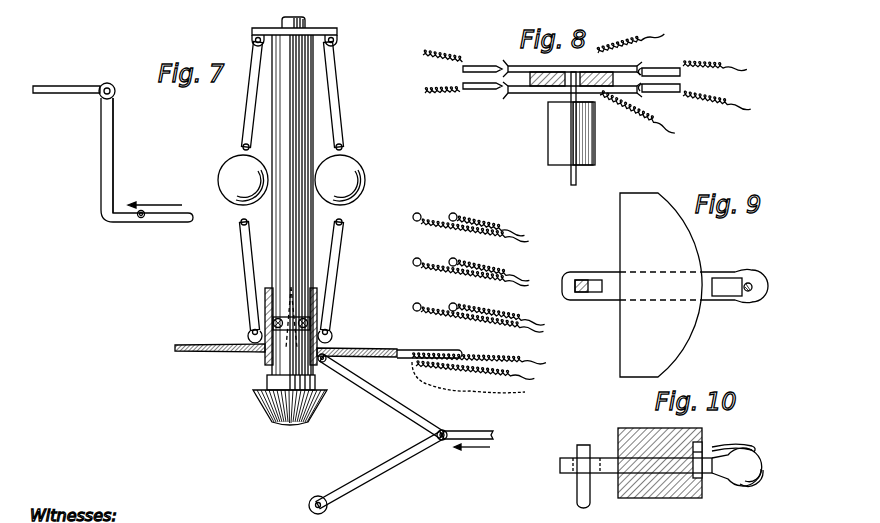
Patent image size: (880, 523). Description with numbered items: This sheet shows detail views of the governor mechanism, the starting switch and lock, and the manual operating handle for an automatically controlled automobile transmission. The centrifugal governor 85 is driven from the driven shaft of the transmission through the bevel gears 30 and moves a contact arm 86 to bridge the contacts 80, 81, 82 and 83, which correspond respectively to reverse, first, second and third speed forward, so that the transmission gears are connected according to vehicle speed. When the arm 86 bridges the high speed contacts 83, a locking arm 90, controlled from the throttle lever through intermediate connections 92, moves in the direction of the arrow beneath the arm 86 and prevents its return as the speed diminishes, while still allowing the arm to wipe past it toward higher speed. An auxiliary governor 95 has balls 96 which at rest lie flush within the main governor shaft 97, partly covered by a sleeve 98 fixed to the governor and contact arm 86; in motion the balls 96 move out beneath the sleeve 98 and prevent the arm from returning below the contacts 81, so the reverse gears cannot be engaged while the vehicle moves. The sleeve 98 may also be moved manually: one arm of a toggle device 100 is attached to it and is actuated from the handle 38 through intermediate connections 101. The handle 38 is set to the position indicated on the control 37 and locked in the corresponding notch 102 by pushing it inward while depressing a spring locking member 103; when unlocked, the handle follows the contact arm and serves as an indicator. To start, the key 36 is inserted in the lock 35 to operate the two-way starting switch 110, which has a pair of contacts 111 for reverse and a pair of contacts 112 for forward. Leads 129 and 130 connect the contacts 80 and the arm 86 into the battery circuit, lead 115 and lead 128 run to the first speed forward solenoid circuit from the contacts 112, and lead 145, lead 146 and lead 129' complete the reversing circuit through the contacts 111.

In FIG. 7, the bevel gears 30 is at (313, 420).
In FIG. 8, the lock 35 is at (580, 138).
In FIG. 8, the key 36 is at (571, 176).
In FIG. 9, the control 37 is at (699, 254).
In FIG. 10, the control 37 is at (702, 432).
In FIG. 9, the handle 38 is at (752, 303).
In FIG. 10, the handle 38 is at (750, 487).
In FIG. 7, the reverse contacts 80 is at (457, 351).
In FIG. 7, the first speed contacts 81 is at (450, 304).
In FIG. 7, the second speed contacts 82 is at (450, 259).
In FIG. 7, the third speed contacts 83 is at (450, 214).
In FIG. 7, the centrifugal governor 85 is at (347, 183).
In FIG. 7, the contact arm 86 is at (405, 359).
In FIG. 7, the locking arm 90 is at (140, 222).
In FIG. 7, the intermediate connections 92 is at (66, 95).
In FIG. 7, the auxiliary governor 95 is at (293, 297).
In FIG. 7, the balls 96 is at (266, 314).
In FIG. 7, the main governor shaft 97 is at (302, 143).
In FIG. 7, the sleeve 98 is at (312, 323).
In FIG. 7, the toggle device 100 is at (395, 402).
In FIG. 7, the intermediate connections 101 is at (467, 430).
In FIG. 10, the intermediate connections 101 is at (582, 496).
In FIG. 10, the notch 102 is at (718, 442).
In FIG. 9, the spring locking member 103 is at (731, 291).
In FIG. 10, the spring locking member 103 is at (735, 447).
In FIG. 8, the starting two-way switch 110 is at (560, 74).
In FIG. 8, the reverse contacts of switch 111 is at (488, 78).
In FIG. 8, the forward contacts of switch 112 is at (656, 82).
In FIG. 8, the lead 115 is at (717, 101).
In FIG. 8, the lead 128 is at (725, 67).
In FIG. 8, the lead 129 is at (642, 30).
In FIG. 8, the lead 129' is at (640, 124).
In FIG. 7, the lead 130 is at (446, 385).
In FIG. 8, the lead 145 is at (444, 52).
In FIG. 8, the lead 146 is at (448, 98).